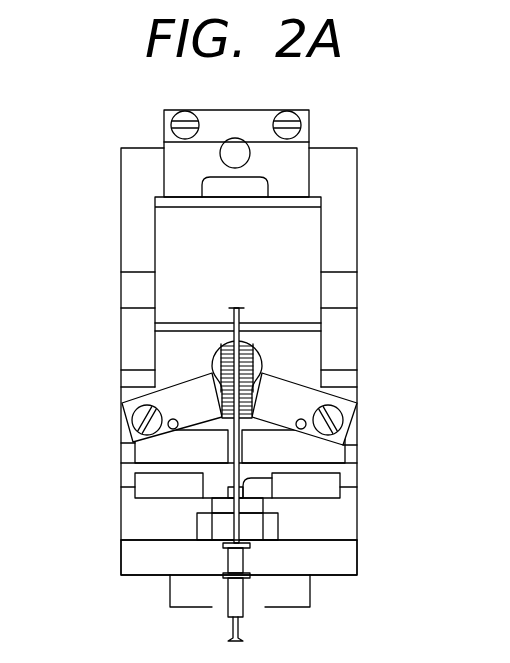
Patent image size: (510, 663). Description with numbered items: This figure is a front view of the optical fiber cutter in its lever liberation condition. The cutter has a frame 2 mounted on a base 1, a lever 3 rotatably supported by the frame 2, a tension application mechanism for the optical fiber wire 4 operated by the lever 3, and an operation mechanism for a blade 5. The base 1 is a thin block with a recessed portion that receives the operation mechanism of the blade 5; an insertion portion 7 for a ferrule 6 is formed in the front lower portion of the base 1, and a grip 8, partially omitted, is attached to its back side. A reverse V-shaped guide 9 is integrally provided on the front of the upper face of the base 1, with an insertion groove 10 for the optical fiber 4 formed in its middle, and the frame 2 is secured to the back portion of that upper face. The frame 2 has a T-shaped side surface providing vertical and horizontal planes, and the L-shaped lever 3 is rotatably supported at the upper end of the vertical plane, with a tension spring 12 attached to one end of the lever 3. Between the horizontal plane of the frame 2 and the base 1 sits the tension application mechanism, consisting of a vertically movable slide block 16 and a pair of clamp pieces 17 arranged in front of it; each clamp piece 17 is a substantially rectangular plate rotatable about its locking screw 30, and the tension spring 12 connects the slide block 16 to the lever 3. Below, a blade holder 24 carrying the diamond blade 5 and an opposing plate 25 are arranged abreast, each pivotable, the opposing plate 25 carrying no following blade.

The base 1 is at (120, 560).
The frame 2 is at (347, 193).
The lever 3 is at (305, 117).
The optical fiber wire 4 is at (240, 318).
The blade 5 is at (255, 485).
The ferrule 6 is at (240, 597).
The insertion portion 7 is at (232, 560).
The grip 8 is at (170, 592).
The reverse V-shaped guide 9 is at (130, 457).
The insertion groove 10 is at (297, 450).
The tension spring 12 is at (212, 368).
The slide block 16 is at (308, 353).
The clamp pieces 17 is at (293, 395).
The blade holder 24 is at (328, 490).
The opposing plate 25 is at (133, 479).
The locking screws 30 is at (337, 417).